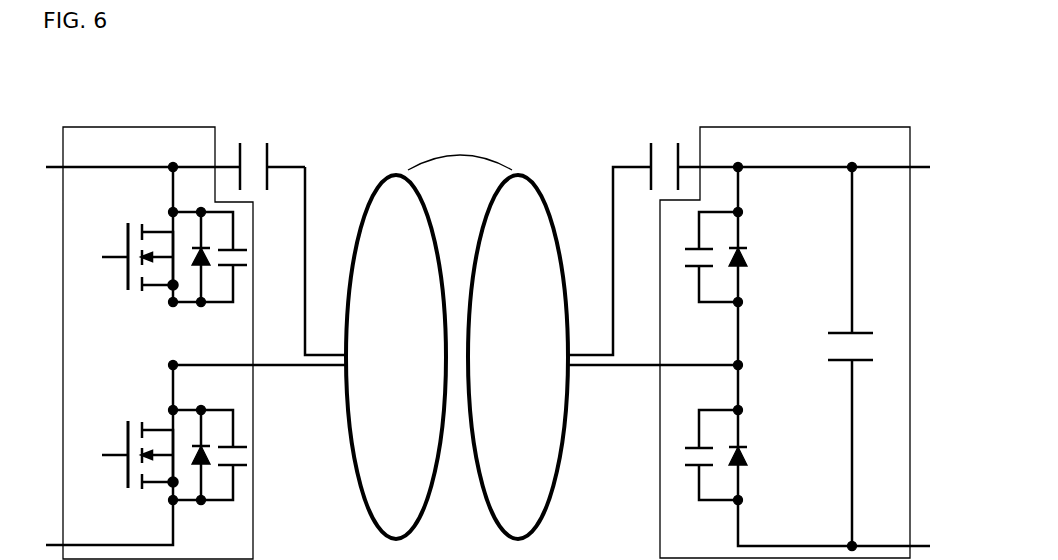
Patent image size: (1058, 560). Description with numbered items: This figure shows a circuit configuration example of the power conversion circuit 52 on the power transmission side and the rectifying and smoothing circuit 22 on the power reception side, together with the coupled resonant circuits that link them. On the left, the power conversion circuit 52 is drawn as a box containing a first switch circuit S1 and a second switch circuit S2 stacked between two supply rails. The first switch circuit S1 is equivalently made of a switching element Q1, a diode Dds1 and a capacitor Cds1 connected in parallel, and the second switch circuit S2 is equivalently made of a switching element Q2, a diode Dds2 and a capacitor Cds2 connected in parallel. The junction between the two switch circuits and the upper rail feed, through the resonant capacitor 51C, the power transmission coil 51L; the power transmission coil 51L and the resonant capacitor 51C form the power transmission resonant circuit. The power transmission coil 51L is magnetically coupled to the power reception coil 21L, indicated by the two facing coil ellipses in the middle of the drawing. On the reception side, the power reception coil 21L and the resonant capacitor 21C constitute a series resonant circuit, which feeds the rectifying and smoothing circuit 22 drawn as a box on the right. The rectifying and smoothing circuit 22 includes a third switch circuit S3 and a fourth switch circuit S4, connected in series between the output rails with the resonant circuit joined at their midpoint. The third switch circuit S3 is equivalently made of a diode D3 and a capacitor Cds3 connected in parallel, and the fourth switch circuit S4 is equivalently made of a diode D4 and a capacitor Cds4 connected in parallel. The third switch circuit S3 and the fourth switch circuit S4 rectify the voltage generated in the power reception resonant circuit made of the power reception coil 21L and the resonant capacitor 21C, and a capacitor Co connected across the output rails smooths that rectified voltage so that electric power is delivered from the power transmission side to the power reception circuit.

The power conversion circuit 52 is at (147, 127).
The rectifying and smoothing circuit 22 is at (817, 127).
The resonant capacitor 51C is at (256, 151).
The resonant capacitor 21C is at (667, 151).
The power transmission coil 51L is at (383, 182).
The power reception coil 21L is at (535, 182).
The switching element Q1 is at (132, 435).
The switching element Q2 is at (132, 237).
The first switch circuit S1 is at (156, 500).
The second switch circuit S2 is at (156, 302).
The third switch circuit S3 is at (754, 490).
The fourth switch circuit S4 is at (754, 295).
The diode Dds1 is at (207, 477).
The diode Dds2 is at (207, 279).
The capacitor Cds1 is at (254, 455).
The capacitor Cds2 is at (253, 257).
The capacitor Cds3 is at (707, 475).
The capacitor Cds4 is at (707, 277).
The diode D3 is at (759, 435).
The diode D4 is at (759, 266).
The capacitor Co is at (861, 356).